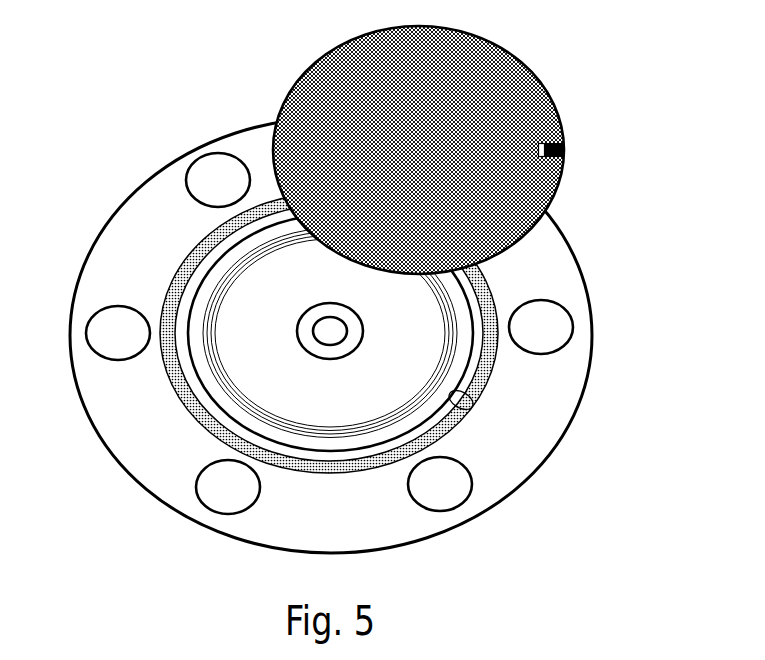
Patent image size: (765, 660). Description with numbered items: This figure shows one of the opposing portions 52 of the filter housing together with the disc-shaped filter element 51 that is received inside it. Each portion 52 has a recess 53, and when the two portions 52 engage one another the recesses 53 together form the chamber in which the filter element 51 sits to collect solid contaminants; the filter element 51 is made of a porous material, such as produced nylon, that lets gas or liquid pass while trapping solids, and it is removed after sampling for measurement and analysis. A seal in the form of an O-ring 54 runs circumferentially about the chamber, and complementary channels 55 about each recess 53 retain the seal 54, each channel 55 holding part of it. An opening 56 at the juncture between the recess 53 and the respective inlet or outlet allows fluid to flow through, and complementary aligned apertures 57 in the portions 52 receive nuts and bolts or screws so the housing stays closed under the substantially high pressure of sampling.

The filter element 51 is at (555, 102).
The opposing portions 52 is at (107, 216).
The recess 53 is at (432, 340).
The O-ring 54 is at (497, 297).
The channels 55 is at (480, 398).
The opening 56 is at (297, 340).
The apertures 57 is at (90, 323).